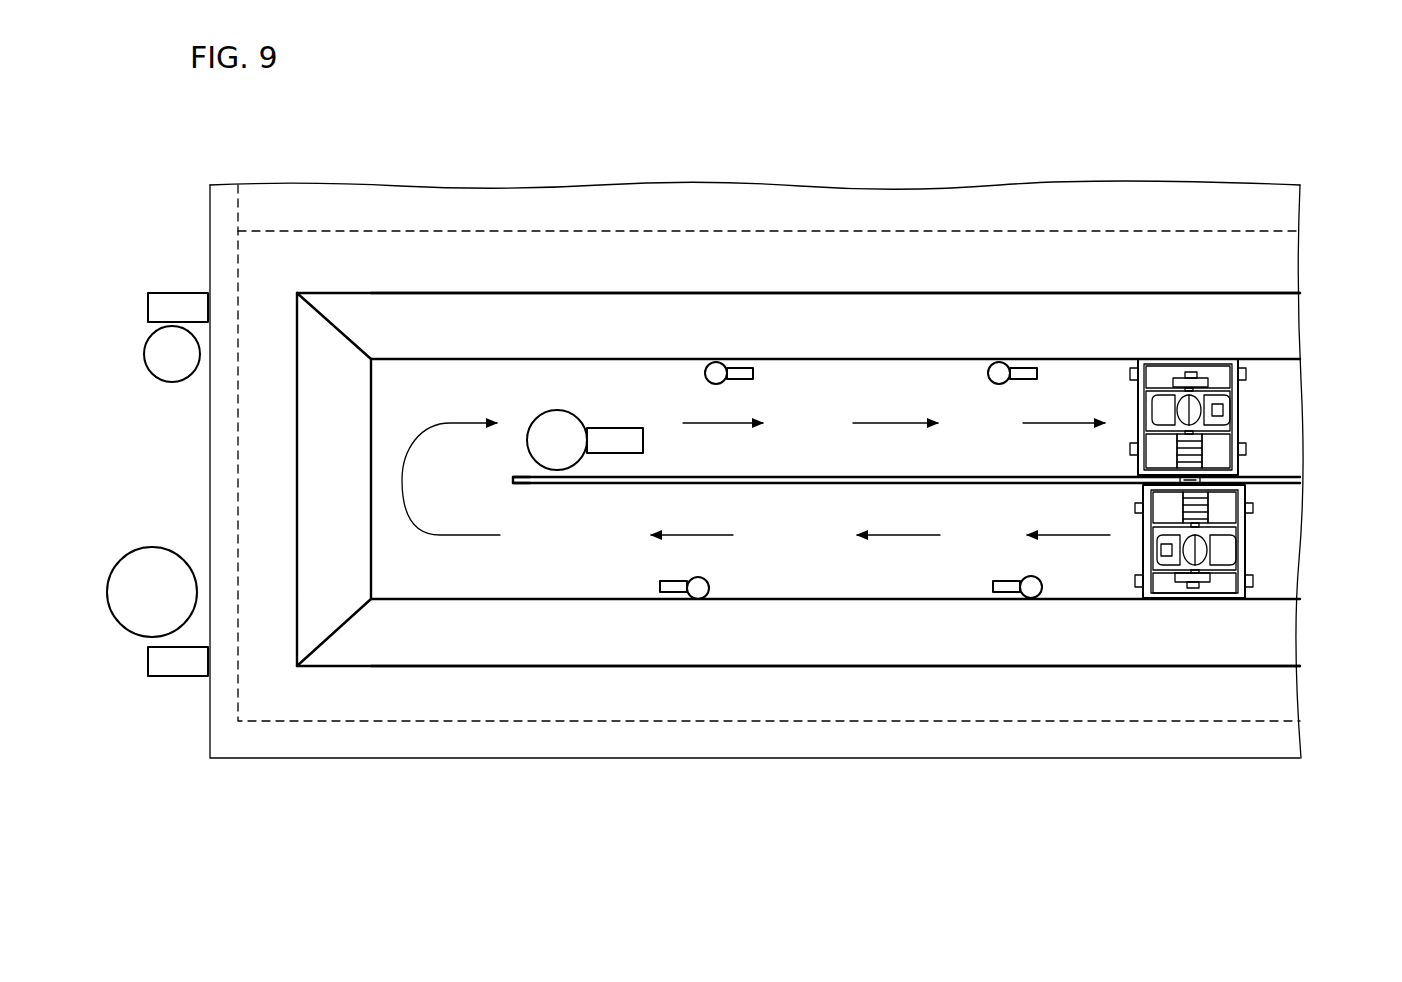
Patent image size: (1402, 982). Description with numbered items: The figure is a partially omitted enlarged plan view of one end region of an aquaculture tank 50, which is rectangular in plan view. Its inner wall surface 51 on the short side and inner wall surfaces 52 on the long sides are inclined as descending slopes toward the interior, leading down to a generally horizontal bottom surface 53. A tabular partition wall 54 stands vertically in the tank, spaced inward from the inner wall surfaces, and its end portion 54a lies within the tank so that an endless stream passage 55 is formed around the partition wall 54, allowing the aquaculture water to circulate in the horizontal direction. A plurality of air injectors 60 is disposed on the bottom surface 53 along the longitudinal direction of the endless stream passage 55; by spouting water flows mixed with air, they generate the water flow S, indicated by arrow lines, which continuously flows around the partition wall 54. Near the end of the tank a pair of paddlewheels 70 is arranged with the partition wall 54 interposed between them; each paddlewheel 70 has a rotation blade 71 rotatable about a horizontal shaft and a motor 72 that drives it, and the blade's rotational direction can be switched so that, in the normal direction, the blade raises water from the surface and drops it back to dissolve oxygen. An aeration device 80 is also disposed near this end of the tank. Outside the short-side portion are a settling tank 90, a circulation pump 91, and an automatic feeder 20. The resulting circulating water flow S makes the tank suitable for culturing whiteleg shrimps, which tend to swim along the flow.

The automatic feeder 20 is at (165, 360).
The aquaculture tank 50 is at (798, 482).
The inner wall surface 51 is at (329, 358).
The inner wall surface 52 is at (817, 318).
The bottom surface 53 is at (453, 458).
The partition wall 54 is at (988, 487).
The end portion 54a is at (498, 487).
The endless stream passage 55 is at (655, 388).
The air injector 60 is at (716, 373).
The paddlewheel 70 is at (1254, 482).
The rotation blade 71 is at (1228, 408).
The motor 72 is at (1200, 507).
The aeration device 80 is at (553, 432).
The settling tank 90 is at (157, 572).
The circulation pump 91 is at (173, 300).
The water flow S is at (705, 422).